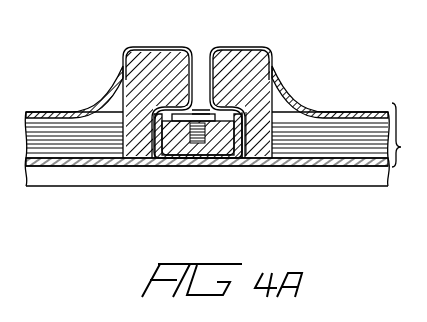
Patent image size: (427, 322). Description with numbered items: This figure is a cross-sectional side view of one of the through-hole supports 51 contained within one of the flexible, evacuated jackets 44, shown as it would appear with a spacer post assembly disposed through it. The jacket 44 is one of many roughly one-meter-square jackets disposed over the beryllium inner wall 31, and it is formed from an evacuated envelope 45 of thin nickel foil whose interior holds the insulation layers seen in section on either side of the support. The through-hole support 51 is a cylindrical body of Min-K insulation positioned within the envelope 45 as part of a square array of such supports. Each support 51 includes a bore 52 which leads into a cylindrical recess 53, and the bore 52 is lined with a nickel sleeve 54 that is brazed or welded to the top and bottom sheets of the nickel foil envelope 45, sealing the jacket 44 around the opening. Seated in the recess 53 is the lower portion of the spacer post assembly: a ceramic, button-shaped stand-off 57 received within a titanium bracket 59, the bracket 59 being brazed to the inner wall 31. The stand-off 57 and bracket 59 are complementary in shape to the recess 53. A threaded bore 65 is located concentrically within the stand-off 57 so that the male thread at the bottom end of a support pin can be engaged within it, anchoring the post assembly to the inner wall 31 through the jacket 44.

The inner wall 31 is at (294, 175).
The flexible, evacuated jacket 44 is at (223, 135).
The evacuated envelope 45 is at (108, 100).
The through-hole support 51 is at (143, 73).
The bore 52 is at (138, 63).
The cylindrical recess 53 is at (143, 140).
The nickel sleeve 54 is at (204, 70).
The button-shaped stand-off 57 is at (188, 143).
The titanium bracket 59 is at (218, 135).
The threaded bore 65 is at (223, 160).